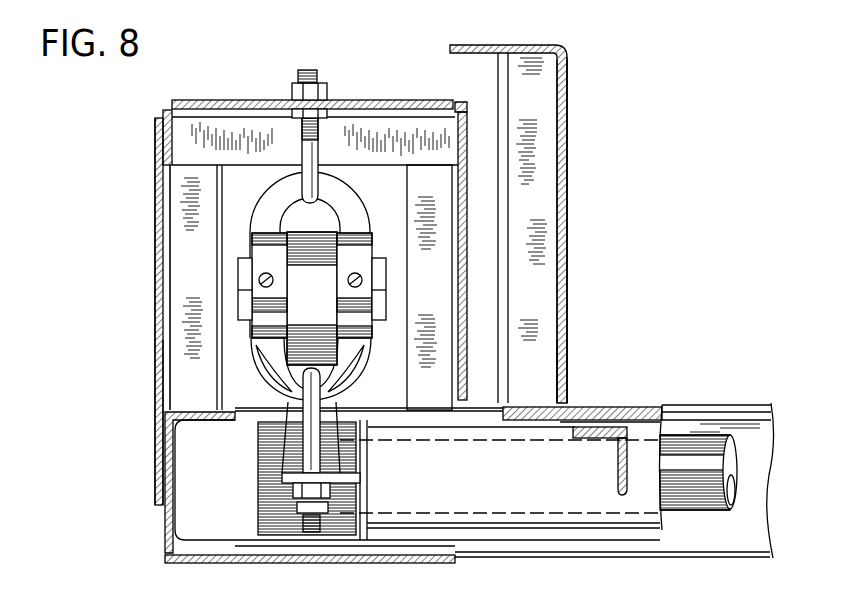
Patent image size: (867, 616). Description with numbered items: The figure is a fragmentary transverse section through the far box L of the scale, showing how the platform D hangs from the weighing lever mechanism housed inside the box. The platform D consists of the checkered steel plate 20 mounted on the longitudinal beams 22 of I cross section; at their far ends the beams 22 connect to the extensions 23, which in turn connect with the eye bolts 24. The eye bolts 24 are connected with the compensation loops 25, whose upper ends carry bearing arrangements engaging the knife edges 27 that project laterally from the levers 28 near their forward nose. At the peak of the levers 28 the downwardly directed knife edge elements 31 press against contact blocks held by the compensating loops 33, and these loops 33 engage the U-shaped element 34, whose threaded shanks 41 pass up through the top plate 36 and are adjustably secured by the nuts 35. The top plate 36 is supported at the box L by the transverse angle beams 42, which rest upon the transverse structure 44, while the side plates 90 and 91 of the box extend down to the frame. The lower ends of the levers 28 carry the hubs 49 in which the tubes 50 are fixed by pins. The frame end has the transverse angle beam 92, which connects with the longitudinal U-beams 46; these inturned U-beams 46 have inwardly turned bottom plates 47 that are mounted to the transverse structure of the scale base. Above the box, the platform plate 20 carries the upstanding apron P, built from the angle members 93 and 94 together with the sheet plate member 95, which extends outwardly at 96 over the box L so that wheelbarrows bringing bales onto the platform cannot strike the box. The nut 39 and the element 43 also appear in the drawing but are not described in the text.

The checkered steel plate 20 is at (636, 407).
The longitudinal beams 22 is at (550, 490).
The extensions 23 is at (288, 478).
The eye bolts 24 is at (305, 427).
The compensation loops 25 is at (345, 366).
The knife edges 27 is at (244, 328).
The levers 28 is at (307, 262).
The knife edge elements 31 is at (244, 270).
The compensating loops 33 is at (272, 211).
The U-shaped element 34 is at (303, 150).
The nuts 35 is at (325, 96).
The top plate 36 is at (247, 100).
The nut 39 is at (330, 506).
The threaded shanks 41 is at (311, 70).
The transverse angle beams 42 is at (161, 112).
The side wall 43 is at (158, 208).
The transverse structure 44 is at (190, 285).
The U-beams 46 is at (748, 420).
The bottom plates 47 is at (404, 564).
The hubs 49 is at (272, 527).
The tubes 50 is at (697, 497).
The side plate 90 is at (156, 378).
The side plate 91 is at (467, 333).
The transverse angle beam 92 is at (165, 527).
The angle member 93 is at (553, 72).
The angle member 94 is at (556, 383).
The sheet plate member 95 is at (567, 206).
The outward extension 96 is at (470, 45).
The far box L is at (153, 172).
The aprons P is at (572, 76).
The platform D is at (666, 404).